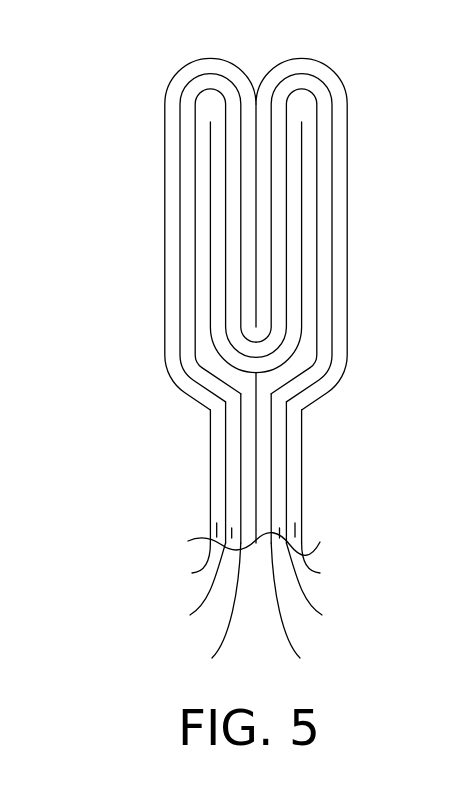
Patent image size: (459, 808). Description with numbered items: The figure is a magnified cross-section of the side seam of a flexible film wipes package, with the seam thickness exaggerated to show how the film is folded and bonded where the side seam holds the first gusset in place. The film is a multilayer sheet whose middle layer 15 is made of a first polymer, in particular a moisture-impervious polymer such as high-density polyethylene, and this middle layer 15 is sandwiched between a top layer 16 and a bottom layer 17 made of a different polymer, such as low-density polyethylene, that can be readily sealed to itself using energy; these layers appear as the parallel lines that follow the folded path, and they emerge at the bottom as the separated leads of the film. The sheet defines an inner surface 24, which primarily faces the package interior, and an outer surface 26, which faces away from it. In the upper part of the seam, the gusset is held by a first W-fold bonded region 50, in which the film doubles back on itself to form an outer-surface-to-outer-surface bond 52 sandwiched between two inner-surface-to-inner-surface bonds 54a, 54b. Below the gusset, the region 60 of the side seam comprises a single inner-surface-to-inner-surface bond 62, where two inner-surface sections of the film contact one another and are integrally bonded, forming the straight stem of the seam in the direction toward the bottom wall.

The middle layer 15 is at (257, 587).
The top layer 16 is at (256, 565).
The bottom layer 17 is at (257, 607).
The inner surface 24 is at (302, 142).
The outer surface 26 is at (182, 388).
The first W-fold bonded region 50 is at (82, 60).
The outer-surface-to-outer-surface bond 52 is at (255, 98).
The inner-surface-to-inner-surface bond 54a is at (210, 288).
The inner-surface-to-inner-surface bond 54b is at (302, 227).
The region of the first side seam 60 is at (274, 464).
The inner-surface-to-inner-surface bond 62 is at (255, 438).